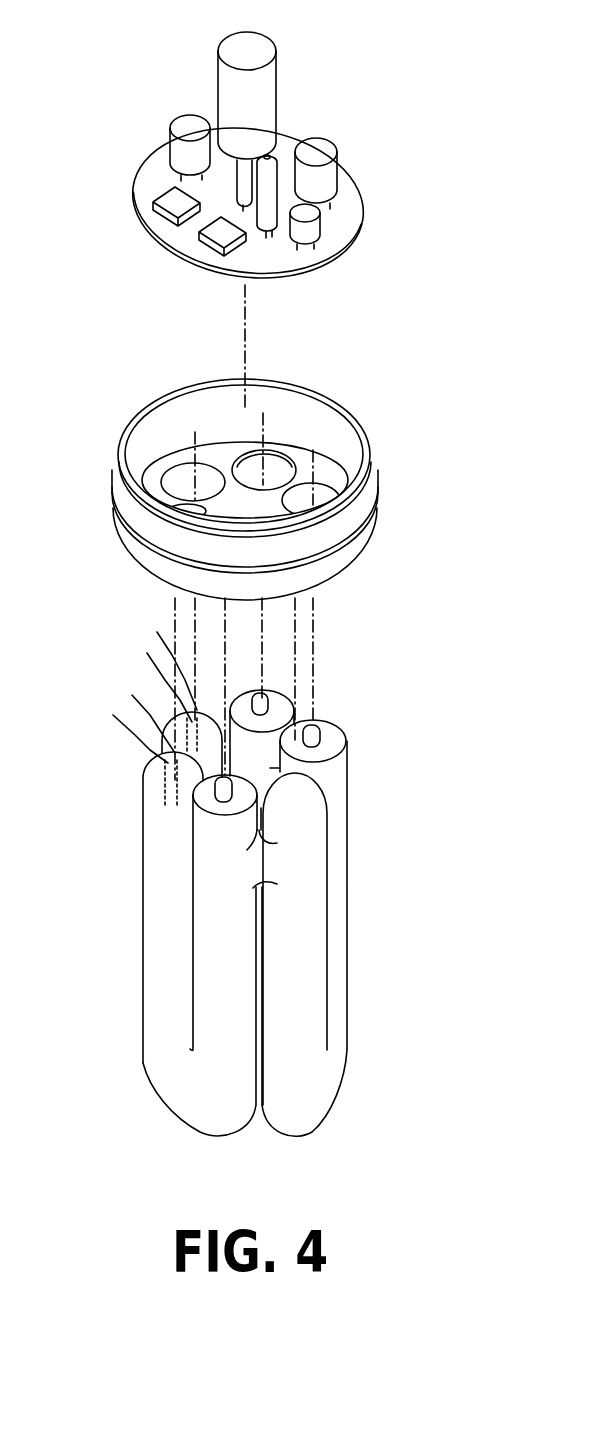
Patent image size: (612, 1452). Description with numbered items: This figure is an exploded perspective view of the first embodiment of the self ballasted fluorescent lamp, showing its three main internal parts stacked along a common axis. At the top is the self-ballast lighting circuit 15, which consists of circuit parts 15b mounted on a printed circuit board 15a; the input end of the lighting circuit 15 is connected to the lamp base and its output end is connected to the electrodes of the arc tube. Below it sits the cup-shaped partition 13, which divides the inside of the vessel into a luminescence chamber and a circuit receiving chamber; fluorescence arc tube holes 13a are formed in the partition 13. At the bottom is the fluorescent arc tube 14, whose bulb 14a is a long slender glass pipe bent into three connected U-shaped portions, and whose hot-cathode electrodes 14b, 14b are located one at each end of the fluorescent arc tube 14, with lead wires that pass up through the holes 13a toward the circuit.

The partition 13 is at (353, 423).
The fluorescence arc tube holes 13a is at (282, 485).
The fluorescent arc tube 14 is at (347, 815).
The bulb 14a is at (303, 950).
The electrodes 14b is at (173, 707).
The self-ballast lighting circuit 15 is at (350, 153).
The printed circuit board 15a is at (333, 230).
The circuit parts 15b is at (285, 80).